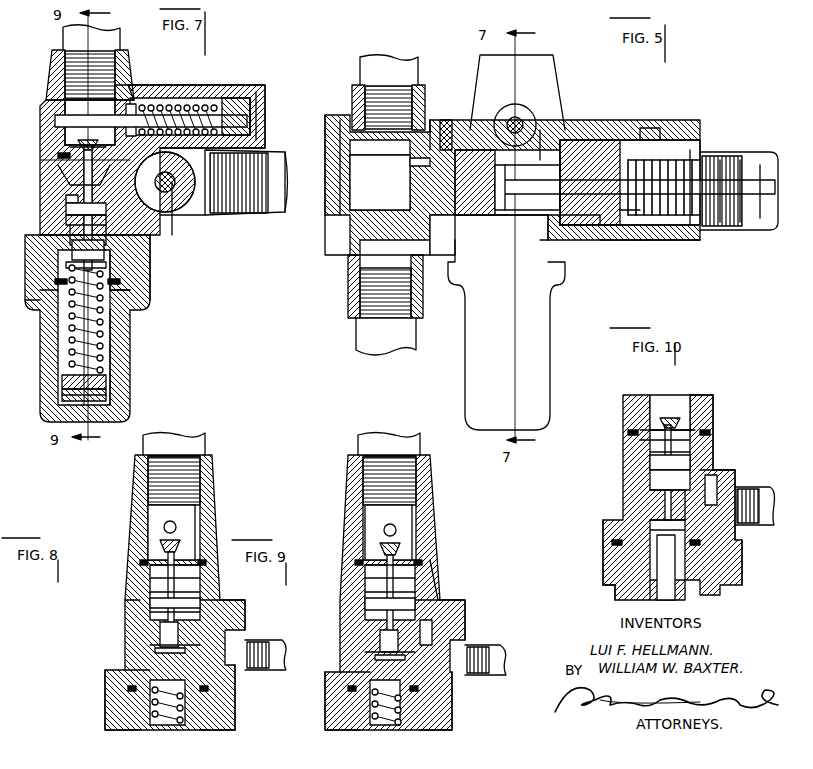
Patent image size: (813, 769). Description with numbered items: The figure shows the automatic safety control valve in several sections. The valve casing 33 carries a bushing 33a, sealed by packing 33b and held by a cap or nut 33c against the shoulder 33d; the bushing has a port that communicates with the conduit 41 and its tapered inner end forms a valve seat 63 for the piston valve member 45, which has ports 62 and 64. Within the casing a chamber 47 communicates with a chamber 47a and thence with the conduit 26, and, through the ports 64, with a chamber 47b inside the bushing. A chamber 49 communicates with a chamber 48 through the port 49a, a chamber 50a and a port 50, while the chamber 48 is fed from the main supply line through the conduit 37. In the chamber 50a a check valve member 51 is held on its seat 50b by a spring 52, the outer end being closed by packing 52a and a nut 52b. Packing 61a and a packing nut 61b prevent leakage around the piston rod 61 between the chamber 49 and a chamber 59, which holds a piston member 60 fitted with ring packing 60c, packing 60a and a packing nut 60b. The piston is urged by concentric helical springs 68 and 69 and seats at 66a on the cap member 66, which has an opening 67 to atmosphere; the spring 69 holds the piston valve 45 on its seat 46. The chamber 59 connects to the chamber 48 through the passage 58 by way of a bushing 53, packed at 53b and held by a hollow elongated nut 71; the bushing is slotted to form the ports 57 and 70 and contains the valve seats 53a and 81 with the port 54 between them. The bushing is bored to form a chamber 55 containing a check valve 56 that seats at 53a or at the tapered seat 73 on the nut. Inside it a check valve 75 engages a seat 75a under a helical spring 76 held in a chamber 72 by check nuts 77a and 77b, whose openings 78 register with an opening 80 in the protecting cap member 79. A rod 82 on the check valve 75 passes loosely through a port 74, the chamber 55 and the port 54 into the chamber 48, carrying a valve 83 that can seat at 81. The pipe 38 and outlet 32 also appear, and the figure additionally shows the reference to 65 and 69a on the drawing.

In FIG. 5, the conduit 26 is at (370, 340).
In FIG. 10, the outlet port 32 is at (760, 495).
In FIG. 8, the outlet port 32 is at (280, 648).
In FIG. 9, the outlet port 32 is at (500, 655).
In FIG. 7, the valve casing 33 is at (212, 237).
In FIG. 5, the valve casing 33 is at (630, 120).
In FIG. 10, the valve casing 33 is at (625, 447).
In FIG. 8, the valve casing 33 is at (218, 520).
In FIG. 9, the valve casing 33 is at (350, 498).
In FIG. 5, the bushing 33a is at (330, 136).
In FIG. 5, the packing 33b is at (330, 152).
In FIG. 5, the cap or nut 33c is at (330, 225).
In FIG. 5, the shoulder 33d is at (432, 120).
In FIG. 7, the conduit 37 is at (63, 33).
In FIG. 8, the conduit 37 is at (205, 452).
In FIG. 9, the conduit 37 is at (365, 455).
In FIG. 7, the side pipe 38 is at (283, 216).
In FIG. 5, the conduit 41 is at (370, 63).
In FIG. 5, the piston valve member 45 is at (470, 242).
In FIG. 5, the seat 46 is at (488, 122).
In FIG. 5, the chamber 47 is at (457, 113).
In FIG. 5, the chamber 47a is at (315, 268).
In FIG. 5, the chamber 47b is at (380, 182).
In FIG. 7, the chamber 48 is at (78, 107).
In FIG. 10, the chamber 48 is at (655, 400).
In FIG. 8, the chamber 48 is at (185, 520).
In FIG. 9, the chamber 48 is at (405, 535).
In FIG. 7, the chamber 49 is at (186, 232).
In FIG. 5, the chamber 49 is at (532, 189).
In FIG. 7, the port 49a is at (170, 186).
In FIG. 5, the port 49a is at (572, 150).
In FIG. 7, the port 50 is at (135, 92).
In FIG. 7, the chamber 50a is at (198, 97).
In FIG. 5, the chamber 50a is at (522, 118).
In FIG. 7, the seat 50b is at (138, 103).
In FIG. 7, the check valve member 51 is at (137, 112).
In FIG. 5, the check valve member 51 is at (550, 128).
In FIG. 7, the spring 52 is at (190, 106).
In FIG. 7, the packing 52a is at (262, 90).
In FIG. 7, the nut 52b is at (264, 106).
In FIG. 7, the bushing 53 is at (56, 176).
In FIG. 10, the bushing 53 is at (713, 430).
In FIG. 8, the bushing 53 is at (140, 585).
In FIG. 9, the bushing 53 is at (432, 590).
In FIG. 7, the valve seat 53a is at (66, 198).
In FIG. 10, the valve seat 53a is at (635, 442).
In FIG. 8, the valve seat 53a is at (200, 594).
In FIG. 9, the valve seat 53a is at (445, 598).
In FIG. 7, the packing 53b is at (130, 170).
In FIG. 10, the packing 53b is at (632, 430).
In FIG. 8, the packing 53b is at (200, 563).
In FIG. 9, the packing 53b is at (355, 563).
In FIG. 7, the port 54 is at (70, 186).
In FIG. 10, the port 54 is at (640, 436).
In FIG. 8, the port 54 is at (150, 575).
In FIG. 9, the port 54 is at (420, 570).
In FIG. 7, the chamber 55 is at (68, 209).
In FIG. 10, the chamber 55 is at (650, 462).
In FIG. 8, the chamber 55 is at (150, 603).
In FIG. 9, the chamber 55 is at (372, 610).
In FIG. 7, the check valve 56 is at (70, 236).
In FIG. 10, the check valve 56 is at (715, 485).
In FIG. 8, the check valve 56 is at (160, 632).
In FIG. 9, the check valve 56 is at (380, 640).
In FIG. 7, the port 57 is at (132, 256).
In FIG. 10, the port 57 is at (710, 470).
In FIG. 8, the port 57 is at (215, 605).
In FIG. 9, the port 57 is at (440, 605).
In FIG. 7, the conduit or port 58 is at (160, 242).
In FIG. 5, the conduit or port 58 is at (566, 242).
In FIG. 10, the conduit or port 58 is at (725, 488).
In FIG. 8, the conduit or port 58 is at (225, 628).
In FIG. 9, the conduit or port 58 is at (448, 628).
In FIG. 5, the chamber 59 is at (616, 240).
In FIG. 5, the piston member 60 is at (674, 130).
In FIG. 5, the packing 60a is at (632, 212).
In FIG. 5, the packing nut 60b is at (666, 240).
In FIG. 5, the ring packing 60c is at (652, 130).
In FIG. 7, the piston rod 61 is at (165, 192).
In FIG. 5, the piston rod 61 is at (596, 178).
In FIG. 5, the packing 61a is at (568, 232).
In FIG. 5, the packing nut 61b is at (551, 256).
In FIG. 5, the ports 62 is at (514, 183).
In FIG. 5, the valve seat 63 is at (440, 122).
In FIG. 5, the ports 64 is at (428, 166).
In FIG. 10, the passage 65 is at (655, 495).
In FIG. 5, the cap member 66 is at (702, 160).
In FIG. 5, the seat 66a is at (692, 152).
In FIG. 5, the opening 67 is at (776, 188).
In FIG. 5, the helical spring 68 is at (745, 232).
In FIG. 5, the helical spring 69 is at (724, 236).
In FIG. 5, the lock nut 69a is at (746, 236).
In FIG. 7, the port 70 is at (70, 250).
In FIG. 10, the port 70 is at (720, 535).
In FIG. 8, the port 70 is at (228, 690).
In FIG. 9, the port 70 is at (445, 690).
In FIG. 7, the hollow elongated nut 71 is at (45, 330).
In FIG. 10, the hollow elongated nut 71 is at (608, 580).
In FIG. 8, the hollow elongated nut 71 is at (118, 715).
In FIG. 9, the hollow elongated nut 71 is at (345, 708).
In FIG. 7, the chamber 72 is at (100, 356).
In FIG. 10, the chamber 72 is at (655, 585).
In FIG. 7, the valve seat 73 is at (140, 284).
In FIG. 10, the valve seat 73 is at (705, 398).
In FIG. 8, the valve seat 73 is at (135, 665).
In FIG. 9, the valve seat 73 is at (365, 622).
In FIG. 10, the port 74 is at (655, 481).
In FIG. 8, the port 74 is at (150, 618).
In FIG. 9, the port 74 is at (435, 630).
In FIG. 7, the check valve 75 is at (70, 284).
In FIG. 10, the check valve 75 is at (650, 528).
In FIG. 8, the check valve 75 is at (160, 652).
In FIG. 9, the check valve 75 is at (378, 660).
In FIG. 7, the seat 75a is at (70, 223).
In FIG. 8, the seat 75a is at (150, 645).
In FIG. 9, the seat 75a is at (370, 652).
In FIG. 7, the helical spring 76 is at (130, 331).
In FIG. 8, the helical spring 76 is at (150, 700).
In FIG. 9, the helical spring 76 is at (370, 700).
In FIG. 7, the check nut 77a is at (65, 380).
In FIG. 7, the check nut 77b is at (102, 385).
In FIG. 7, the opening 78 is at (65, 393).
In FIG. 7, the protecting cap member 79 is at (40, 304).
In FIG. 5, the protecting cap member 79 is at (558, 320).
In FIG. 10, the protecting cap member 79 is at (603, 562).
In FIG. 8, the protecting cap member 79 is at (228, 712).
In FIG. 9, the protecting cap member 79 is at (455, 715).
In FIG. 7, the opening 80 is at (82, 424).
In FIG. 7, the valve seat 81 is at (84, 158).
In FIG. 10, the valve seat 81 is at (666, 420).
In FIG. 8, the valve seat 81 is at (180, 560).
In FIG. 9, the valve seat 81 is at (392, 560).
In FIG. 7, the rod 82 is at (92, 147).
In FIG. 10, the rod 82 is at (660, 455).
In FIG. 8, the rod 82 is at (180, 580).
In FIG. 9, the rod 82 is at (370, 585).
In FIG. 7, the valve 83 is at (84, 143).
In FIG. 10, the valve 83 is at (670, 420).
In FIG. 8, the valve 83 is at (160, 545).
In FIG. 9, the valve 83 is at (380, 548).